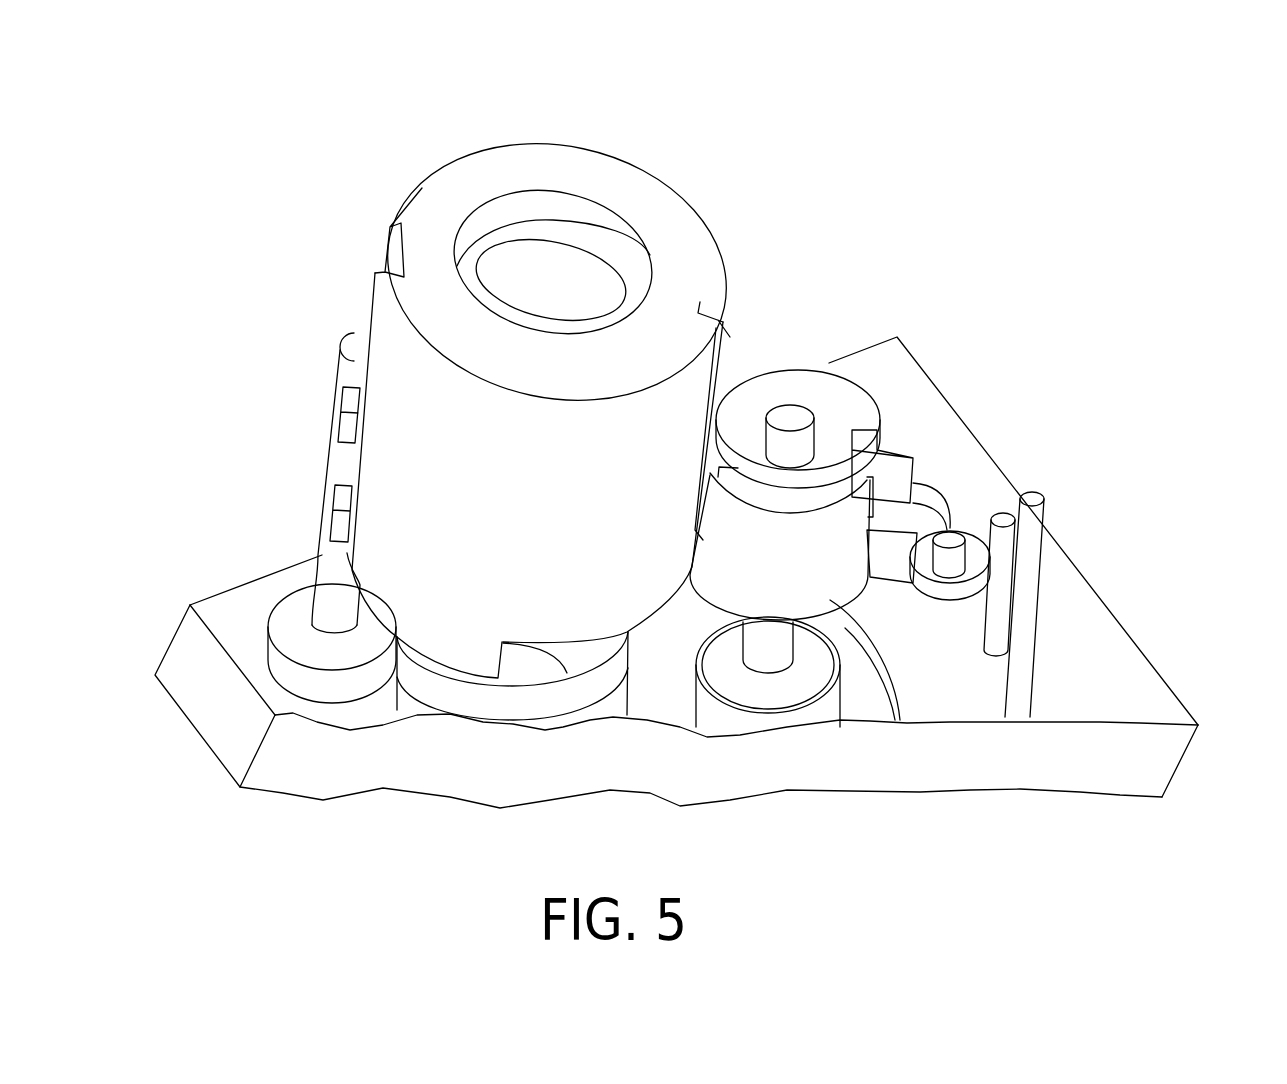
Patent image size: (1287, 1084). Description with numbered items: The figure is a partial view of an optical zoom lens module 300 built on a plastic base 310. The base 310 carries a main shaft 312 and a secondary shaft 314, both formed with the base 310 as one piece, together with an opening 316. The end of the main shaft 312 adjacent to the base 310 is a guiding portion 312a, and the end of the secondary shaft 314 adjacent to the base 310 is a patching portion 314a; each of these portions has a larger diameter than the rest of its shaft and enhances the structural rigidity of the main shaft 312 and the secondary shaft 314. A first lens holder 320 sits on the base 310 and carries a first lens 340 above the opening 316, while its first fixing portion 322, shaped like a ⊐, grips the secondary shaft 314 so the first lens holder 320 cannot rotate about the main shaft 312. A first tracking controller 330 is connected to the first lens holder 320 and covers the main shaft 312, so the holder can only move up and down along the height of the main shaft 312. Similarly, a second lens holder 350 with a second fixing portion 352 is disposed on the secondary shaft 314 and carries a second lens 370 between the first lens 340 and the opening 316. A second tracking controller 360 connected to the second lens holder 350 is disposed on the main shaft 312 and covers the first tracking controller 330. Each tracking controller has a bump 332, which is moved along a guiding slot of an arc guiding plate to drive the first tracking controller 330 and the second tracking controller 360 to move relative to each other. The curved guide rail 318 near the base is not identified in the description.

The optical zoom lens module 300 is at (1270, 794).
The base 310 is at (990, 477).
The main shaft 312 is at (797, 413).
The guiding portion 312a is at (853, 683).
The secondary shaft 314 is at (356, 338).
The patching portion 314a is at (283, 658).
The opening 316 is at (518, 673).
The arc rail 318 is at (879, 656).
The first lens holder 320 is at (537, 160).
The first fixing portion 322 is at (337, 522).
The first tracking controller 330 is at (752, 408).
The bump 332 is at (903, 467).
The first lens 340 is at (577, 213).
The second lens holder 350 is at (728, 298).
The second fixing portion 352 is at (337, 423).
The second tracking controller 360 is at (853, 413).
The second lens 370 is at (597, 271).